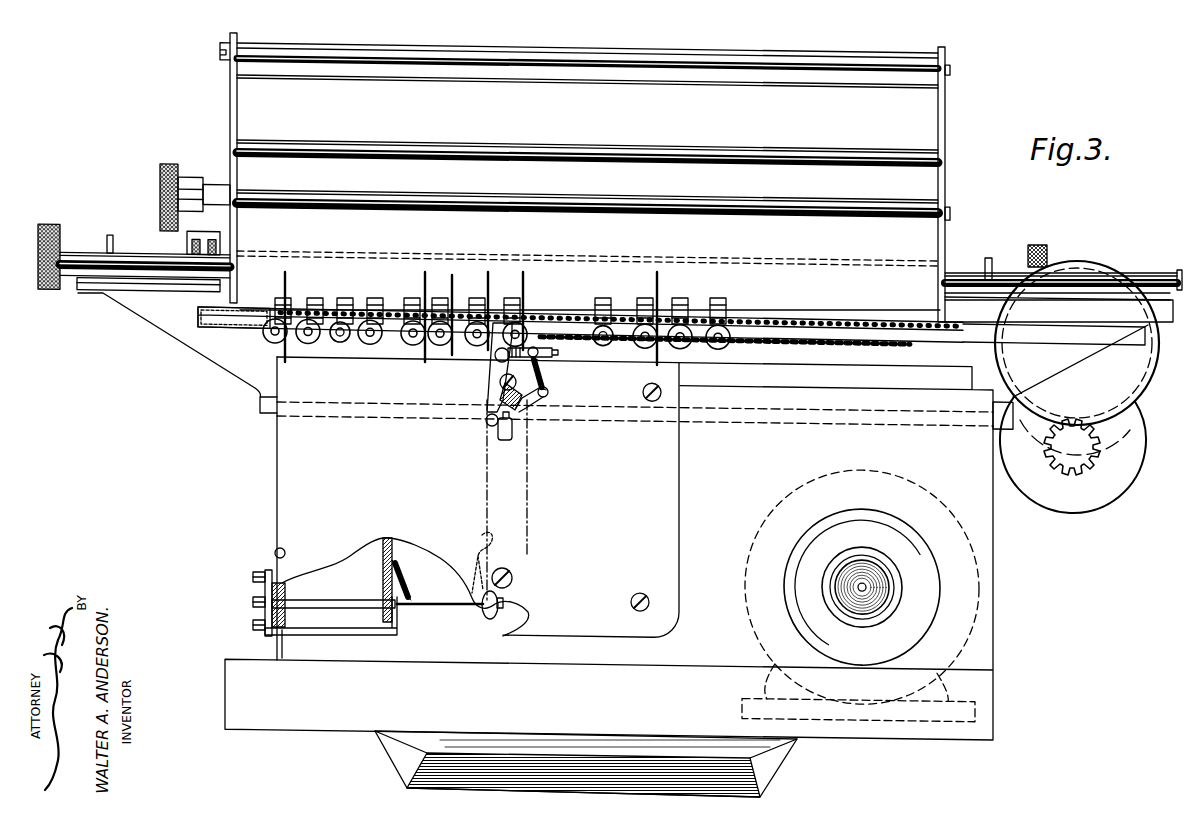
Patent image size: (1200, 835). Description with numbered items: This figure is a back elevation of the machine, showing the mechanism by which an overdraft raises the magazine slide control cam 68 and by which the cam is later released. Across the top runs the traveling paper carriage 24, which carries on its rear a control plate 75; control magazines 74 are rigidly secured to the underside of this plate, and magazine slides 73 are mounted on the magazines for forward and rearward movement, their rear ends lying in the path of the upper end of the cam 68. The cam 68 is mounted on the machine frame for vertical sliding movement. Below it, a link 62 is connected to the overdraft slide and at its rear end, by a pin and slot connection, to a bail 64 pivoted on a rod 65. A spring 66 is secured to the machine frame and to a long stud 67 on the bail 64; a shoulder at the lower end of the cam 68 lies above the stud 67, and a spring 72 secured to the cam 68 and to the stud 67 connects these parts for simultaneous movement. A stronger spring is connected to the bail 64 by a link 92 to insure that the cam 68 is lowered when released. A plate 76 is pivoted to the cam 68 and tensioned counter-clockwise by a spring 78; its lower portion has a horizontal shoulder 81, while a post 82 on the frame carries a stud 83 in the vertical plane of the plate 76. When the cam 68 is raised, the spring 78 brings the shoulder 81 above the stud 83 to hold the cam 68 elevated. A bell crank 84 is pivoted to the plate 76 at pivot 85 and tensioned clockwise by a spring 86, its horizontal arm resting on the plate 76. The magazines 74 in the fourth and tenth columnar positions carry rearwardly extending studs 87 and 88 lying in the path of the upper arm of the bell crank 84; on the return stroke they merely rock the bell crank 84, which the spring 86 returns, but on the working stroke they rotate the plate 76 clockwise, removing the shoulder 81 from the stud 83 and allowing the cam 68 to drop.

The traveling paper carriage 24 is at (948, 197).
The control magazines 74 is at (374, 298).
The bell crank 84 is at (520, 331).
The control plate 75 is at (197, 322).
The magazine slides 73 is at (284, 350).
The stud 88 is at (347, 344).
The pivot 85 is at (495, 358).
The spring 86 is at (545, 372).
The stud 87 is at (603, 346).
The spring 78 is at (523, 409).
The plate 76 is at (493, 388).
The horizontal shoulder 81 is at (519, 412).
The post 82 is at (492, 427).
The stud 83 is at (513, 432).
The magazine slide control cam 68 is at (528, 495).
The link 62 is at (268, 571).
The rod 65 is at (253, 601).
The link 92 is at (253, 627).
The bail 64 is at (341, 636).
The spring 66 is at (404, 583).
The long stud 67 is at (446, 607).
The spring 72 is at (478, 557).